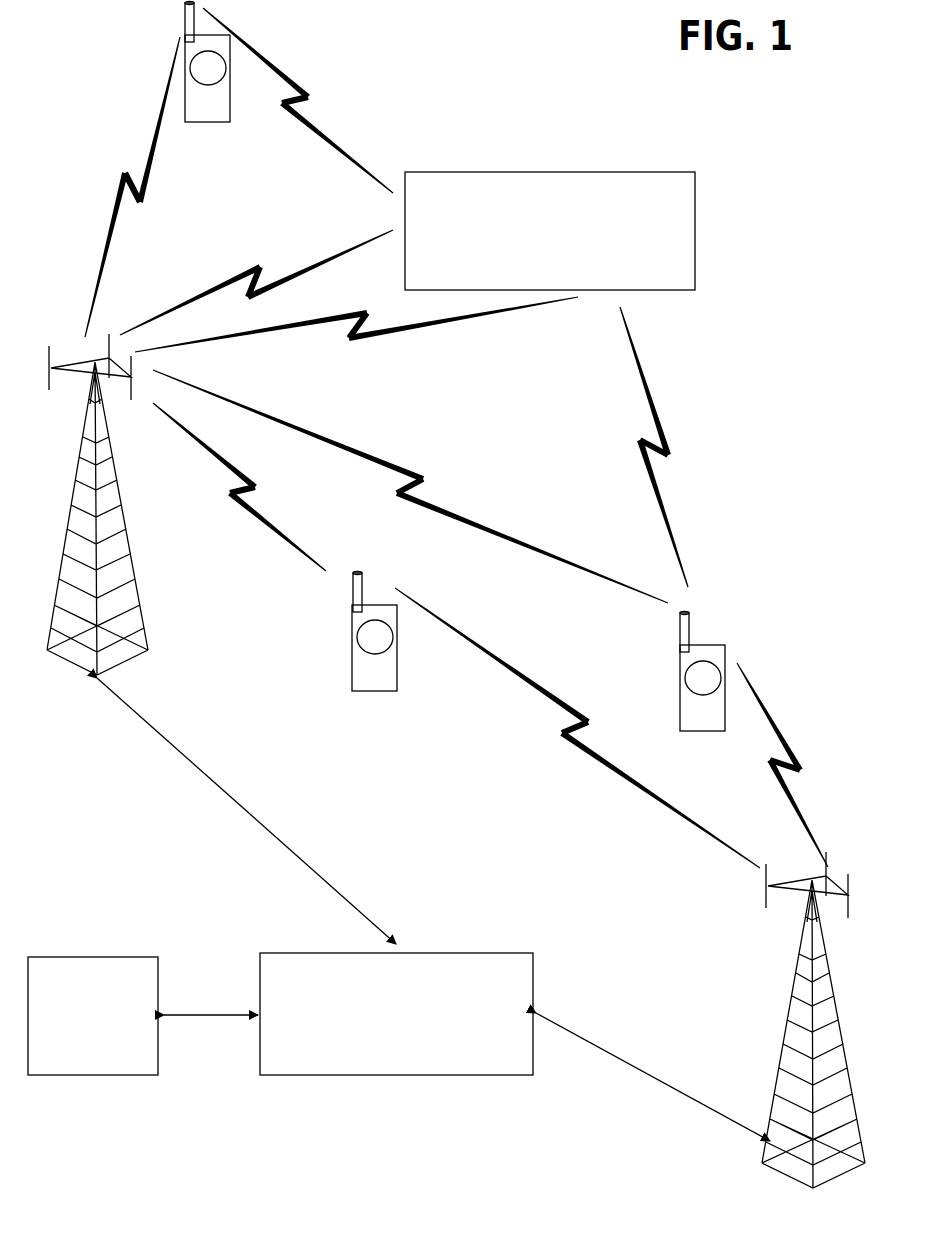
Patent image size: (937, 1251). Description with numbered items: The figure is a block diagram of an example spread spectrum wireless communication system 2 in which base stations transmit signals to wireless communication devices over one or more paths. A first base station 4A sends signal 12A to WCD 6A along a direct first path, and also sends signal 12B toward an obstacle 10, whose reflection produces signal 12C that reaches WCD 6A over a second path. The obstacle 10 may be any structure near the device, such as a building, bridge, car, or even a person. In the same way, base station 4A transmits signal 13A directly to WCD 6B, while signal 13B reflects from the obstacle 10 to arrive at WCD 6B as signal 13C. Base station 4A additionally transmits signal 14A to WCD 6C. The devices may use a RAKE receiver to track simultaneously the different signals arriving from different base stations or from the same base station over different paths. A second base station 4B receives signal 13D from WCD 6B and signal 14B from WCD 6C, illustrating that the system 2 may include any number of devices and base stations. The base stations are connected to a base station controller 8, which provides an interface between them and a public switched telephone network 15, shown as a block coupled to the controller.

The spread spectrum wireless communication system 2 is at (400, 72).
The base station 4A is at (145, 624).
The base station 4B is at (862, 1128).
The WCD 6A is at (212, 136).
The WCD 6B is at (729, 637).
The WCD 6C is at (341, 648).
The base station controller 8 is at (396, 1014).
The obstacle 10 is at (550, 231).
The signal 12A is at (123, 174).
The signal 12B is at (307, 97).
The signal 12C is at (260, 268).
The signal 13A is at (423, 480).
The signal 13B is at (670, 453).
The signal 13C is at (370, 337).
The signal 13D is at (800, 770).
The signal 14A is at (229, 490).
The signal 14B is at (562, 722).
The public switched telephone network 15 is at (93, 1016).